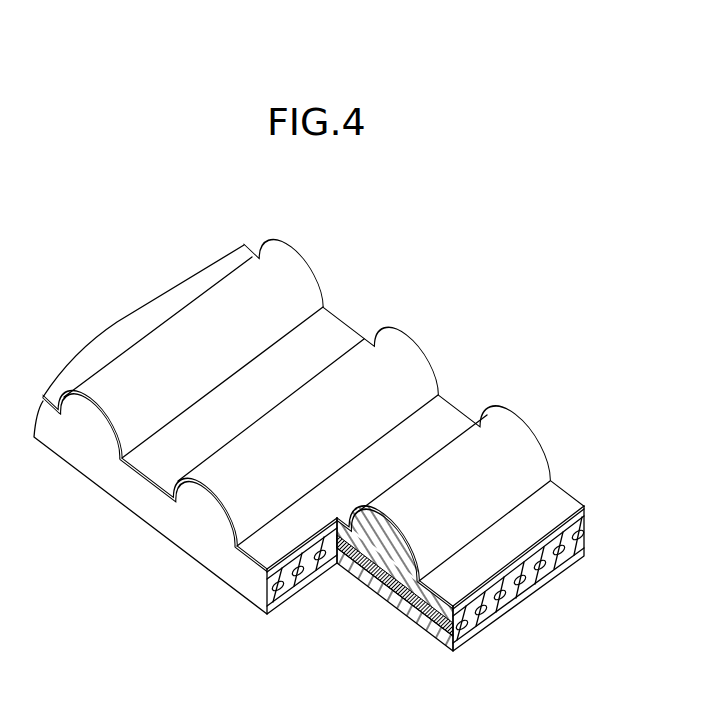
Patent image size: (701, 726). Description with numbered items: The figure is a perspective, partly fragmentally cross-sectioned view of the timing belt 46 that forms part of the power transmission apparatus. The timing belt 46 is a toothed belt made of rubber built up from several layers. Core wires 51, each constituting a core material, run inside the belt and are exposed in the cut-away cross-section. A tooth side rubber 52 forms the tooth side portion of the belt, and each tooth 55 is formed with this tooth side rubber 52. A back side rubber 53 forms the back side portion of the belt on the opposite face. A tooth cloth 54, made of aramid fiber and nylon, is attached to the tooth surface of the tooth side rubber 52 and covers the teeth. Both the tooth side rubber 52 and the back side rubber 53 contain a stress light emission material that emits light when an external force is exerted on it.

The timing belt 46 is at (519, 266).
The core wires 51 is at (298, 594).
The tooth side rubber 52 is at (355, 557).
The back side rubber 53 is at (468, 632).
The tooth cloth 54 is at (147, 485).
The tooth 55 is at (415, 333).